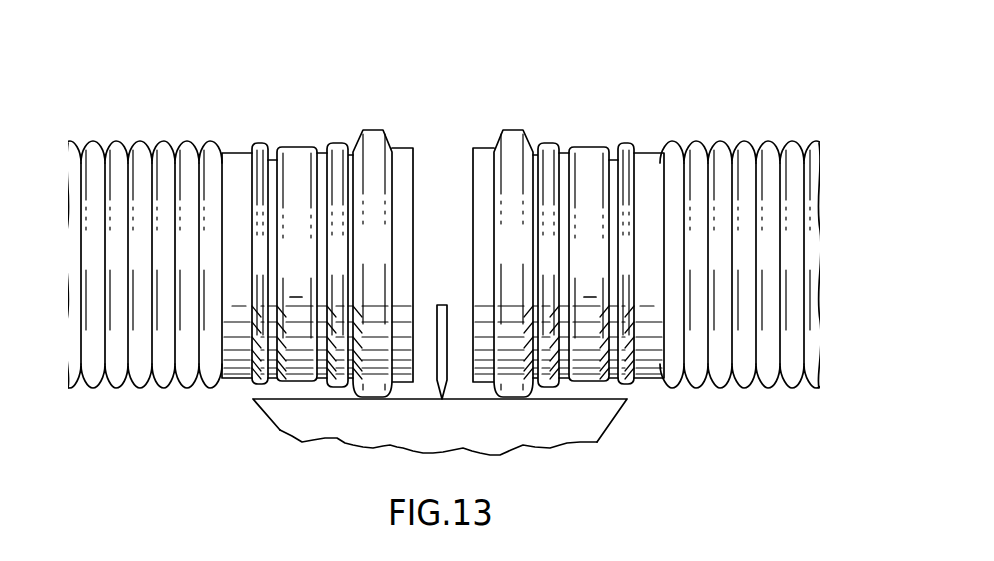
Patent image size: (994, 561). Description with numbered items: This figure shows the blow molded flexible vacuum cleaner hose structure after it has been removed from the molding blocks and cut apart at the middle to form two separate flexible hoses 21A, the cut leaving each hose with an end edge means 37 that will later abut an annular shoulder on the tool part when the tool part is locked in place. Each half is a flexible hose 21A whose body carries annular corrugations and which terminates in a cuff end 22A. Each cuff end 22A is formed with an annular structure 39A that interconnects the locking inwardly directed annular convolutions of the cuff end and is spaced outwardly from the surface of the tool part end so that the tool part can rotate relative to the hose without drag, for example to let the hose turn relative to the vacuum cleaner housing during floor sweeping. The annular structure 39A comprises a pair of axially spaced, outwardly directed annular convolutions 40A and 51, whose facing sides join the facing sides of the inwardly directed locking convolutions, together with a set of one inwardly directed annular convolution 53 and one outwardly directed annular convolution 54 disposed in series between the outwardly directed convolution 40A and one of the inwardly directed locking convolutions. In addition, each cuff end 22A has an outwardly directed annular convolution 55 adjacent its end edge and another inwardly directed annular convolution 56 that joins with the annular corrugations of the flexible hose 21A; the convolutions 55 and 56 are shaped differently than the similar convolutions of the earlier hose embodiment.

The flexible hose 21A is at (111, 142).
The cuff end 22A is at (300, 147).
The end edge means 37 is at (413, 178).
The annular structure 39A is at (295, 145).
The outwardly directed annular convolution 40A is at (329, 147).
The outwardly directed annular convolution 51 is at (260, 143).
The inwardly directed annular convolution 53 is at (318, 150).
The outwardly directed annular convolution 54 is at (295, 380).
The outwardly directed annular convolution 55 is at (380, 127).
The inwardly directed annular convolution 56 is at (228, 150).